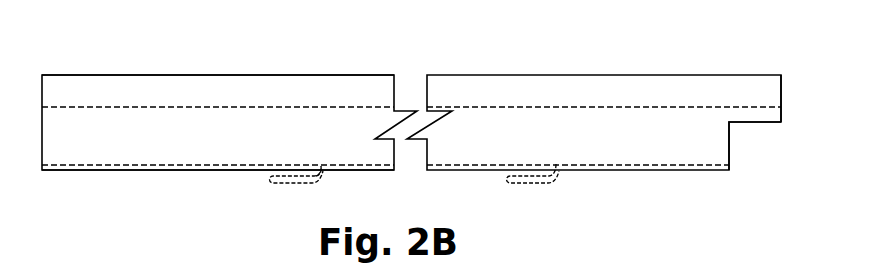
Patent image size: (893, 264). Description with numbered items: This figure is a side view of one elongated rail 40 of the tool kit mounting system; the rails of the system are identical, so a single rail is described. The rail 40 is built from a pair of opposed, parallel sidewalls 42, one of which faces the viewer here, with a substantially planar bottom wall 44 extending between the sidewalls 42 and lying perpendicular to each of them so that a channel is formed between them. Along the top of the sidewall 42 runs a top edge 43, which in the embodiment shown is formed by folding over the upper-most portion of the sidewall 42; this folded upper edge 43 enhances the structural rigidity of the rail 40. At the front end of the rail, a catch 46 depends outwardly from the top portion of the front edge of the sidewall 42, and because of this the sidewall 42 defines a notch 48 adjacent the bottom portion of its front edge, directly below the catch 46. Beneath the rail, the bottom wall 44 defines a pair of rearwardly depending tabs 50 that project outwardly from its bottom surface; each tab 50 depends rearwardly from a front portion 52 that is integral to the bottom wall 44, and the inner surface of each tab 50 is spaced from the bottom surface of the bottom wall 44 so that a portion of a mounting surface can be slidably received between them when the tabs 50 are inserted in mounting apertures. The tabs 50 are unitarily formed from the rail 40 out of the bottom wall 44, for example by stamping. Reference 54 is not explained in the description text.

The rail 40 is at (538, 0).
The sidewall 42 is at (248, 128).
The top edge 43 is at (147, 75).
The bottom wall 44 is at (145, 172).
The catch 46 is at (760, 74).
The notch 48 is at (759, 143).
The tab 50 is at (535, 184).
The front portion 52 is at (321, 170).
The tab 54 is at (273, 177).